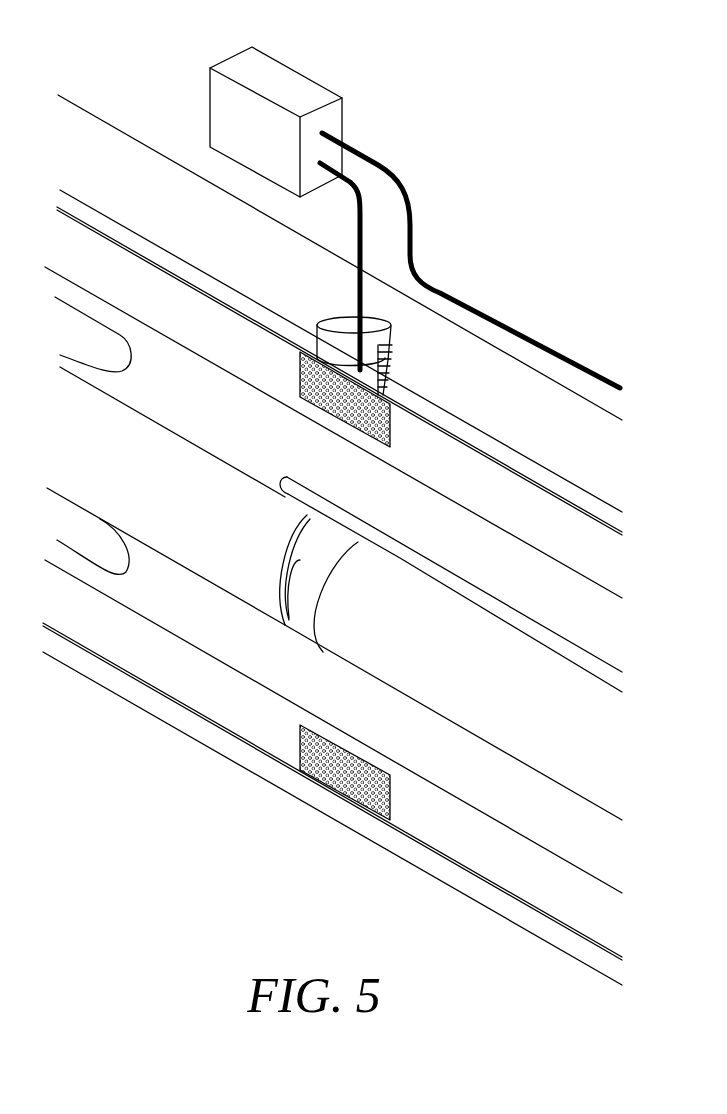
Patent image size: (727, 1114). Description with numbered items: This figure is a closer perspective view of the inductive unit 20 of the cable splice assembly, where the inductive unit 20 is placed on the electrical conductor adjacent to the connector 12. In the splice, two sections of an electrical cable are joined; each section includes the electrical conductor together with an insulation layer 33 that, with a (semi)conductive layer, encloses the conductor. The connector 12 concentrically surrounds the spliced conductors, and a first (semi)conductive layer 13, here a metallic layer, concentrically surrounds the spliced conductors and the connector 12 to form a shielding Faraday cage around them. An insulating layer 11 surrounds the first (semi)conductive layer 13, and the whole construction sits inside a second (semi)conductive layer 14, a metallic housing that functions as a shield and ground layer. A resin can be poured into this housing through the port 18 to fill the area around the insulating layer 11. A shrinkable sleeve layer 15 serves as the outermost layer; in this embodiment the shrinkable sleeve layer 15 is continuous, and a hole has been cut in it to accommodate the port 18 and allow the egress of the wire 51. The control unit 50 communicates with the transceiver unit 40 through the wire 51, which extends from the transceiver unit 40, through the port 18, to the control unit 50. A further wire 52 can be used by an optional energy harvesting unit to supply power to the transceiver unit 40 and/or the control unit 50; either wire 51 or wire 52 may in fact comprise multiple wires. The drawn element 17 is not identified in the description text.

The insulating layer 11 is at (181, 403).
The connector 12 is at (416, 656).
The first (semi)conductive layer 13 is at (350, 527).
The second (semi)conductive layer 14 is at (512, 468).
The shrinkable sleeve layer 15 is at (464, 395).
The top panel 17 is at (123, 296).
The port 18 is at (337, 333).
The inductive unit 20 is at (293, 582).
The insulation layer 33 is at (141, 505).
The transceiver unit 40 is at (342, 770).
The control unit 50 is at (285, 85).
The wire 51 is at (358, 197).
The wire 52 is at (410, 222).